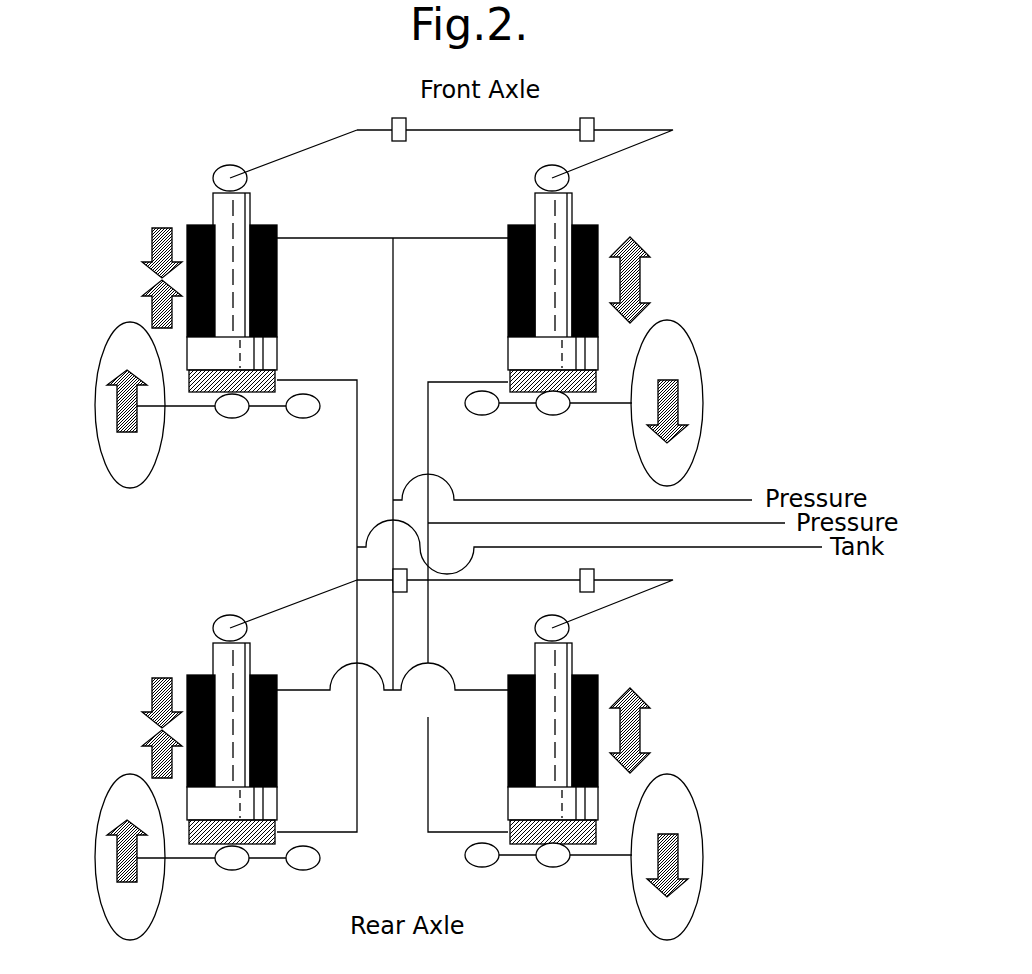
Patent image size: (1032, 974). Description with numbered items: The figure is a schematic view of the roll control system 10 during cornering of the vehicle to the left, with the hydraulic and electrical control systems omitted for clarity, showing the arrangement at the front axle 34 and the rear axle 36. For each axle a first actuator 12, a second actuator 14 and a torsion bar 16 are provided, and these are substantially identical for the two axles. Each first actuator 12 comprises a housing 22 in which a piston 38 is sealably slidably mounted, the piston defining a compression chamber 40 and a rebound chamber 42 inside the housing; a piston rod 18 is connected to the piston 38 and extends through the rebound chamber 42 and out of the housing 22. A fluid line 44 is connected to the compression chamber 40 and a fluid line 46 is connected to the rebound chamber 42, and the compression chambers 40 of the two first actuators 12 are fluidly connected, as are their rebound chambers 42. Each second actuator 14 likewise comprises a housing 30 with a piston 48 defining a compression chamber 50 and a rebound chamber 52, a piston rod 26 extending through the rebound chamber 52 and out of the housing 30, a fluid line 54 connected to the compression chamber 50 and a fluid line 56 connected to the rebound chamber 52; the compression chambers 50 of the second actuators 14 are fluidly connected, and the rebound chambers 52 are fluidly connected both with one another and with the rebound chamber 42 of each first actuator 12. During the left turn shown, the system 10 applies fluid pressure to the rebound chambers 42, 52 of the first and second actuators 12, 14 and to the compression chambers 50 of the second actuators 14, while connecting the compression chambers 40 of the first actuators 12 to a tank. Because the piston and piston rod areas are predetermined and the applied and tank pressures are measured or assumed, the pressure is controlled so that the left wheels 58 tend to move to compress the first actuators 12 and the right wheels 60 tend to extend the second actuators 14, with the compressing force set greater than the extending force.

The roll control system 10 is at (243, 556).
The first actuator 12 is at (136, 289).
The second actuator 14 is at (660, 279).
The torsion bar 16 is at (475, 132).
The piston rod 18 is at (222, 213).
The housing 22 is at (263, 506).
The piston rod 26 is at (572, 206).
The housing 30 is at (552, 495).
The front axle 34 is at (200, 420).
The rear axle 36 is at (197, 875).
The piston 38 is at (277, 345).
The compression chamber 40 is at (263, 412).
The rebound chamber 42 is at (277, 270).
The fluid line 44 is at (339, 384).
The fluid line 46 is at (299, 237).
The piston 48 is at (522, 351).
The compression chamber 50 is at (524, 394).
The rebound chamber 52 is at (598, 229).
The fluid line 54 is at (455, 386).
The fluid line 56 is at (458, 237).
The left wheels 58 is at (105, 460).
The right wheels 60 is at (703, 404).